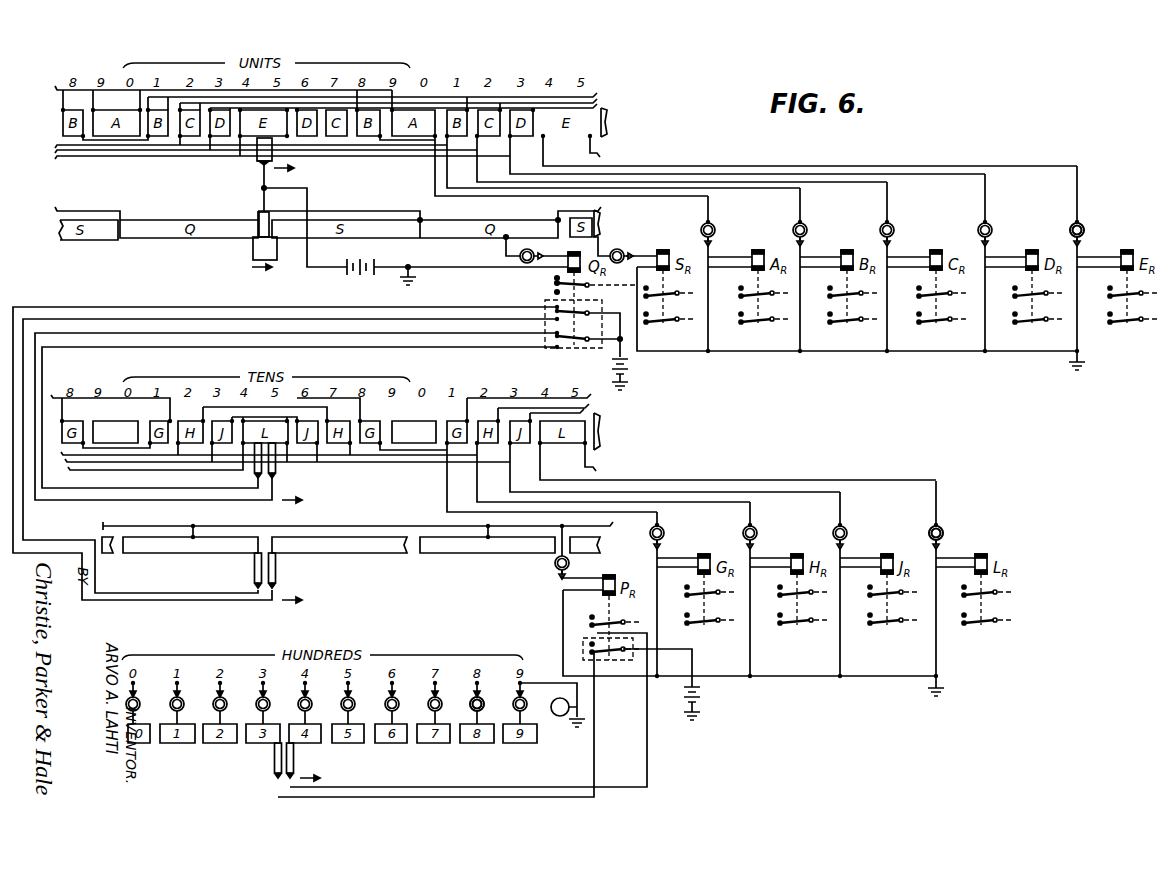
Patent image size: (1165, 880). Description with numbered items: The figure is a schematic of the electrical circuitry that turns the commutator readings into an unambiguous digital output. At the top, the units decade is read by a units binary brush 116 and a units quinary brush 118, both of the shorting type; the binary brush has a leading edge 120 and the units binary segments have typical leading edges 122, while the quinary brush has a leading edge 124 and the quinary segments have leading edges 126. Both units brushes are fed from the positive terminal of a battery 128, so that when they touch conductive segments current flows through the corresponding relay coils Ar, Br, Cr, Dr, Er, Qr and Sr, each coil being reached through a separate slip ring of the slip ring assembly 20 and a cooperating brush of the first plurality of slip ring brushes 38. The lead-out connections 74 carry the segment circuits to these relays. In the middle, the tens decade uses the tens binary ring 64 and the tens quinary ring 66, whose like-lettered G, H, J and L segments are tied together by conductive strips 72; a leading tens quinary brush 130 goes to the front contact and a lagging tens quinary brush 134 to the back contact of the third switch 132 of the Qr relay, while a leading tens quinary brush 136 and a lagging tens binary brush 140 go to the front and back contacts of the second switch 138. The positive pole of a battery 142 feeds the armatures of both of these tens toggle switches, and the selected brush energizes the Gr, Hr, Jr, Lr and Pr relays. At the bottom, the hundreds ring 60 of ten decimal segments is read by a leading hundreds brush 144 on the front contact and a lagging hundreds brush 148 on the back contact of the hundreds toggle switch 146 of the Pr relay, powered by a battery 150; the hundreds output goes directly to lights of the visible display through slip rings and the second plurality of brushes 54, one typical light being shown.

The slip ring assembly 20 is at (484, 690).
The first plurality of slip ring brushes 38 is at (946, 542).
The second plurality of brushes 54 is at (476, 690).
The first ring of conductive segments 60 is at (434, 750).
The second ring of conductive segments 64 is at (438, 558).
The third ring of conductive segments 66 is at (615, 427).
The conductive strips 72 is at (615, 220).
The lead-out connections 74 is at (622, 114).
The units binary brush 116 is at (256, 247).
The units quinary brush 118 is at (258, 148).
The leading edge of units binary brush 120 is at (278, 256).
The leading edges of units binary segments 122 is at (116, 238).
The leading edge of units quinary brush 124 is at (276, 148).
The leading edges of units quinary segments 126 is at (93, 132).
The battery 128 is at (362, 278).
The leading tens quinary brush 130 is at (277, 462).
The third switch of the Qr relay 132 is at (570, 337).
The lagging tens quinary brush 134 is at (255, 460).
The leading tens quinary brush 136 is at (277, 578).
The second switch of the Qr relay 138 is at (562, 303).
The lagging tens binary brush 140 is at (254, 578).
The battery 142 is at (611, 360).
The leading hundreds brush 144 is at (294, 757).
The second switch of the Pr relay 146 is at (603, 660).
The lagging hundreds brush 148 is at (274, 762).
The battery 150 is at (702, 693).